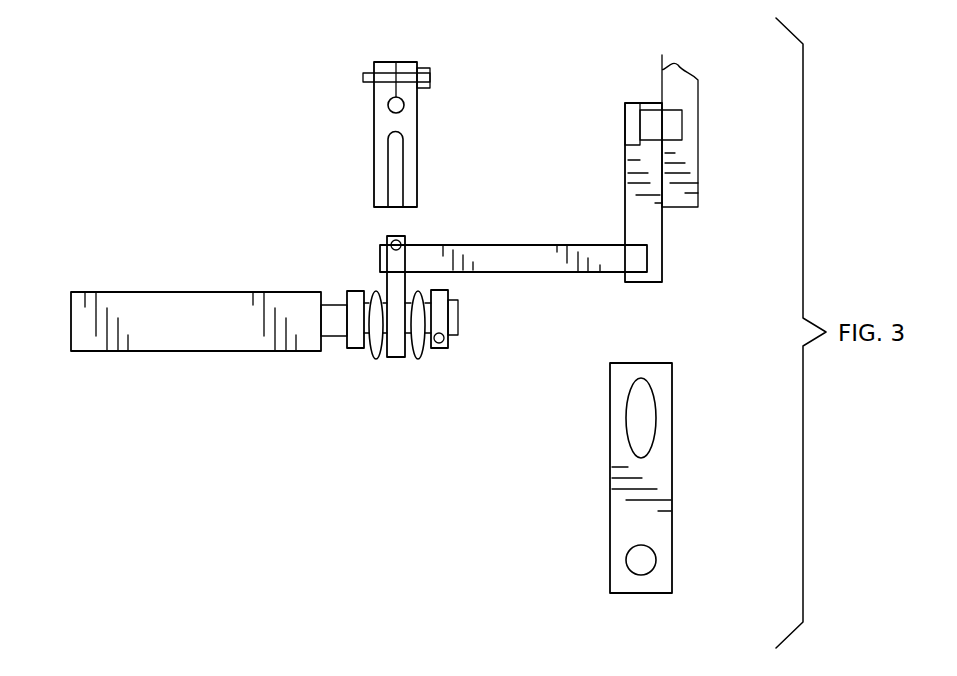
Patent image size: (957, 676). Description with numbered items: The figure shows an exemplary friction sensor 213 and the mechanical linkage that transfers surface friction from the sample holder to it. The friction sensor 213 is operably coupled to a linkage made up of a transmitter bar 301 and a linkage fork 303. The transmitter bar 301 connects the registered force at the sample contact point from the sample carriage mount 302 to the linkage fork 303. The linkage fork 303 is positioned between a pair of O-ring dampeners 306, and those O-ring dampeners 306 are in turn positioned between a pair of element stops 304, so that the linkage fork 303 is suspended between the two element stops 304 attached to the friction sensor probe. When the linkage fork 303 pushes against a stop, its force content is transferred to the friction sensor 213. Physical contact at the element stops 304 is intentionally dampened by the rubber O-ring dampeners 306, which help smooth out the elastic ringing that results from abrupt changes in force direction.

The friction sensor 213 is at (190, 308).
The transmitter bar 301 is at (492, 253).
The sample carriage mount 302 is at (672, 82).
The linkage fork 303 is at (392, 291).
The element stops 304 is at (441, 344).
The O-ring dampeners 306 is at (417, 356).